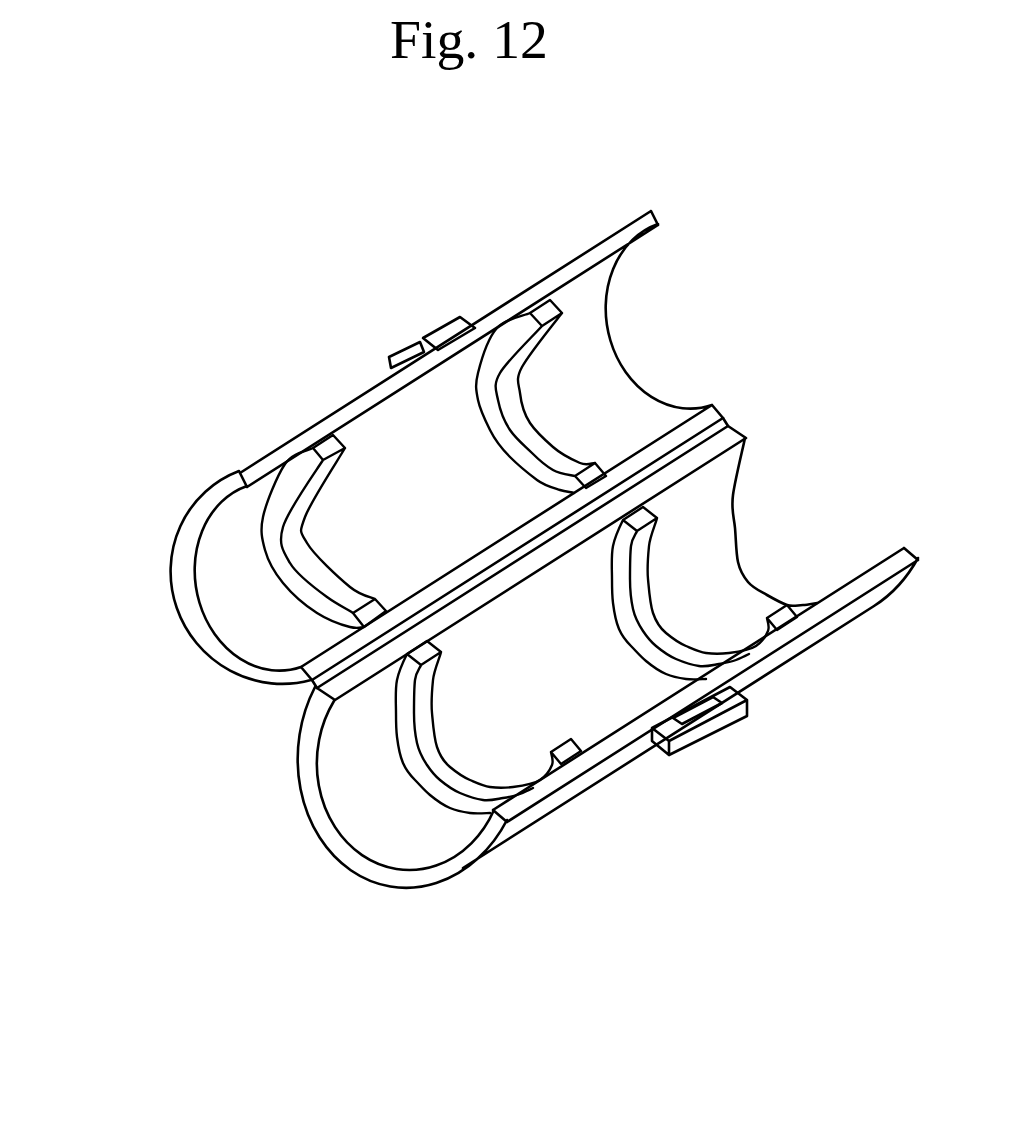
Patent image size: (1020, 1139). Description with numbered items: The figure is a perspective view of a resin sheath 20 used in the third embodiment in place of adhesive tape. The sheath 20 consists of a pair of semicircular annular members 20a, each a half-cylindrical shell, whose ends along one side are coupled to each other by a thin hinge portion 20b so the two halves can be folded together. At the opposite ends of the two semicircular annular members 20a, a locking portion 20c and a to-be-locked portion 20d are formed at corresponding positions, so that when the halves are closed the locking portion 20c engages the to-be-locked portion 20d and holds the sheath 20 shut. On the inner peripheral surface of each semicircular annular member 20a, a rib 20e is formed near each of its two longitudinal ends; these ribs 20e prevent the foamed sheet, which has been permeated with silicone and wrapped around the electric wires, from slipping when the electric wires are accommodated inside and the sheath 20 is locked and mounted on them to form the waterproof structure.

The sheath 20 is at (248, 366).
The semicircular annular member 20a is at (232, 618).
The hinge portion 20b is at (307, 687).
The locking portion 20c is at (453, 327).
The to-be-locked portion 20d is at (702, 735).
The rib 20e is at (520, 423).